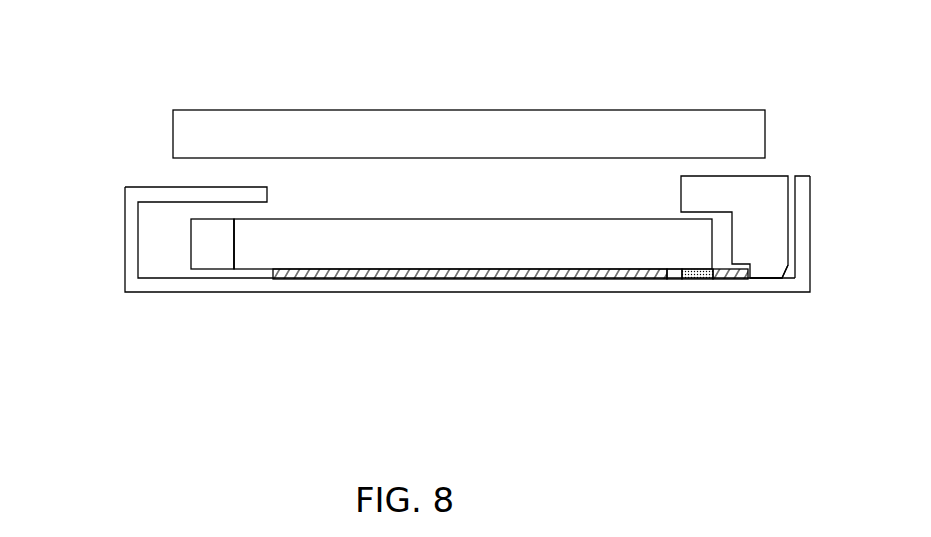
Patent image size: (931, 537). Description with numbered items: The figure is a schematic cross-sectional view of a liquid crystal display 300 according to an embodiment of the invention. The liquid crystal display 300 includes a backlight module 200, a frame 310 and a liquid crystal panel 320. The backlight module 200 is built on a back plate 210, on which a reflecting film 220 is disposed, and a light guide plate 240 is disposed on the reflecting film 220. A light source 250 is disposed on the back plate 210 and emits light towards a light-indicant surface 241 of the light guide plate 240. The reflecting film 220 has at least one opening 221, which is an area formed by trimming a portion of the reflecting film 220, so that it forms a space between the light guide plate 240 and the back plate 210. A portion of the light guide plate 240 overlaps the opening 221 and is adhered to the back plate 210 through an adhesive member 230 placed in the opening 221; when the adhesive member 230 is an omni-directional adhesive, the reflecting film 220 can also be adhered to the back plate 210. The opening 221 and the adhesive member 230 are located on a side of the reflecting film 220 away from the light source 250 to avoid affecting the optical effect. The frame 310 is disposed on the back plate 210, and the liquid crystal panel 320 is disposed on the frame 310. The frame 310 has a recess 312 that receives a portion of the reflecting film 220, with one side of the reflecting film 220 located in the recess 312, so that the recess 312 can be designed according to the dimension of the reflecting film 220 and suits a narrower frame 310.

The liquid crystal display 300 is at (117, 58).
The backlight module 200 is at (121, 245).
The back plate 210 is at (165, 283).
The reflecting film 220 is at (457, 277).
The opening 221 is at (675, 281).
The adhesive member 230 is at (695, 281).
The light guide plate 240 is at (487, 232).
The light-indicant surface 241 is at (236, 247).
The light source 250 is at (217, 255).
The frame 310 is at (778, 185).
The recess 312 is at (763, 283).
The liquid crystal panel 320 is at (623, 123).